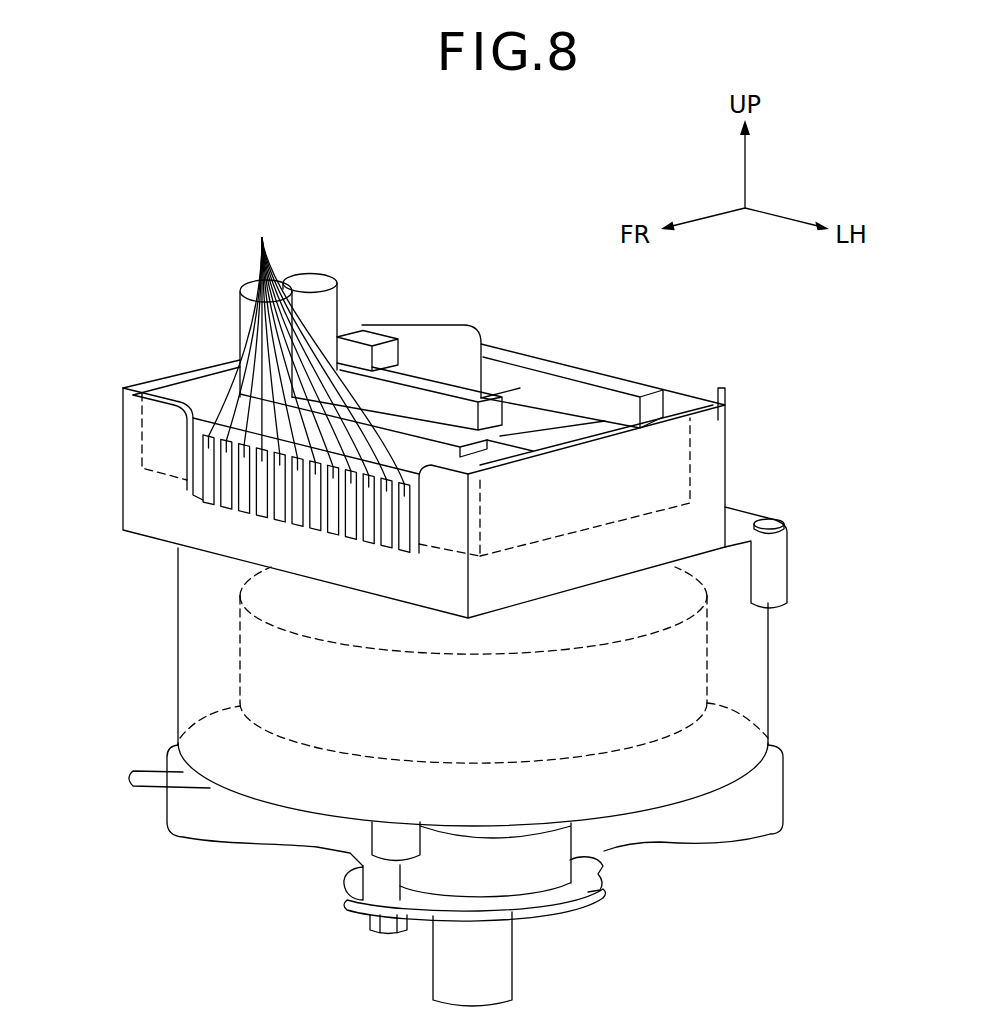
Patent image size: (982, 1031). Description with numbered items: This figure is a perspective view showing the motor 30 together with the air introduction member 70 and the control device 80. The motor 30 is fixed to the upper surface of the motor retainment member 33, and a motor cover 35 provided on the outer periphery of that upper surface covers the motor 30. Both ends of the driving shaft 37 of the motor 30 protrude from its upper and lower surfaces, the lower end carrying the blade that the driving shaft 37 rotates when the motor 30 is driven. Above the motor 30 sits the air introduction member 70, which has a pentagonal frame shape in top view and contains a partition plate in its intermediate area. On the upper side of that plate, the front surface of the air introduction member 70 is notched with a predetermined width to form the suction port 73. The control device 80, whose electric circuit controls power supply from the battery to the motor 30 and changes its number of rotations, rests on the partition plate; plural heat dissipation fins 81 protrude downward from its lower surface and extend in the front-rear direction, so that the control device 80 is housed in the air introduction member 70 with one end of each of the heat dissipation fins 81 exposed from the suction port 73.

The motor 30 is at (683, 670).
The motor retainment member 33 is at (763, 813).
The motor cover 35 is at (770, 700).
The driving shaft 37 is at (493, 942).
The air introduction member 70 is at (727, 463).
The suction port 73 is at (197, 457).
The control device 80 is at (550, 343).
The heat dissipation fins 81 is at (262, 242).